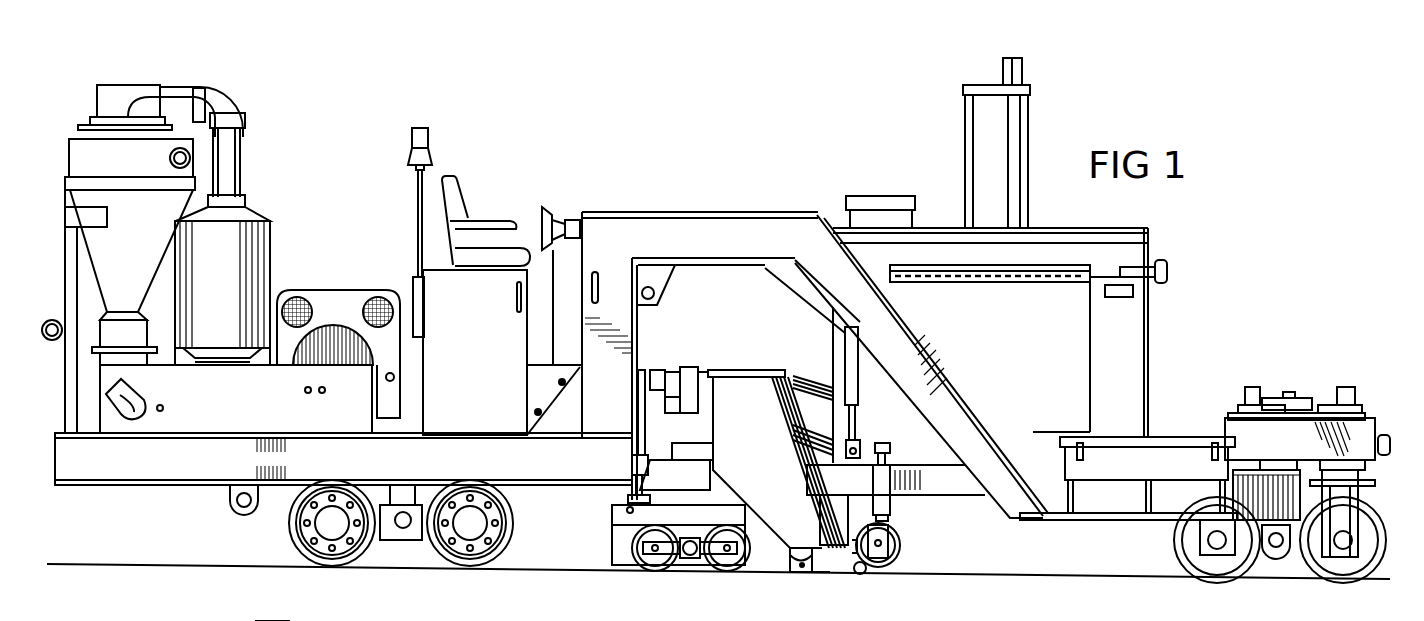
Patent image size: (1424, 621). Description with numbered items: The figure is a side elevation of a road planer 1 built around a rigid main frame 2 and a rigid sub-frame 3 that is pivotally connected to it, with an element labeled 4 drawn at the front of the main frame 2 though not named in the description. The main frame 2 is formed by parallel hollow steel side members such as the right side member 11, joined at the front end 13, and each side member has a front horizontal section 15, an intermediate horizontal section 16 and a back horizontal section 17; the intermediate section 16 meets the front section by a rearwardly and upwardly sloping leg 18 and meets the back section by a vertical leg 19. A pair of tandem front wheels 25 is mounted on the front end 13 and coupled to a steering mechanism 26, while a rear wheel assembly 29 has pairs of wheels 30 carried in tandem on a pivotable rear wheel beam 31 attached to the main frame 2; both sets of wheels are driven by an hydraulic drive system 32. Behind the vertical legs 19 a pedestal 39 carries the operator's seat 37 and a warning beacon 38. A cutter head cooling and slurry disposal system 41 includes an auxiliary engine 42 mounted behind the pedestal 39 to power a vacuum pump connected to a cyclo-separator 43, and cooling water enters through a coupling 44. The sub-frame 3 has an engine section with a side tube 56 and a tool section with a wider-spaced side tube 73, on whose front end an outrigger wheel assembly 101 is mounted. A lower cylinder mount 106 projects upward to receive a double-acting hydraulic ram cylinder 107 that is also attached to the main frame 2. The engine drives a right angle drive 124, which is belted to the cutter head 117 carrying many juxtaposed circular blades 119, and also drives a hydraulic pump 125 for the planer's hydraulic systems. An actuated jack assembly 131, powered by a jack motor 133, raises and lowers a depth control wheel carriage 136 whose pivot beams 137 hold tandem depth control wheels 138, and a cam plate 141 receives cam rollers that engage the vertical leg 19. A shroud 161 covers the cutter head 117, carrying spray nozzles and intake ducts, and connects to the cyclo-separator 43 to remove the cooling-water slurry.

The road planer 1 is at (1188, 232).
The main frame 2 is at (1030, 525).
The sub-frame 3 is at (977, 502).
The main frame 4 is at (55, 462).
The right side member 11 is at (817, 213).
The front end 13 is at (1262, 455).
The front horizontal section 15 is at (1145, 522).
The intermediate horizontal section 16 is at (662, 212).
The back horizontal section 17 is at (166, 486).
The sloping leg 18 is at (965, 366).
The vertical leg 19 is at (640, 314).
The front wheels 25 is at (1245, 566).
The steering mechanism 26 is at (1378, 416).
The rear wheel assembly 29 is at (530, 543).
The rear wheels 30 is at (372, 552).
The rear wheel beam 31 is at (404, 541).
The hydraulic drive system 32 is at (702, 368).
The operator's seat 37 is at (456, 178).
The warning beacon 38 is at (426, 128).
The pedestal 39 is at (437, 268).
The cutter head cooling and slurry disposal system 41 is at (268, 150).
The auxiliary engine 42 is at (338, 282).
The cyclo-separator 43 is at (97, 87).
The coupling 44 is at (122, 376).
The right side tube of engine section 56 is at (936, 465).
The right side tube of tool section 73 is at (667, 487).
The outrigger wheel assembly 101 is at (900, 545).
The lower cylinder mount 106 is at (862, 445).
The hydraulic ram cylinder 107 is at (848, 372).
The cutter head 117 is at (820, 572).
The circular blades 119 is at (792, 572).
The right angle drive 124 is at (753, 370).
The hydraulic pump 125 is at (688, 367).
The actuated jack assembly 131 is at (641, 412).
The jack motor 133 is at (706, 444).
The depth control wheel carriage 136 is at (613, 526).
The pivot beams 137 is at (704, 523).
The depth control wheels 138 is at (668, 571).
The cam plate 141 is at (274, 620).
The shroud 161 is at (861, 495).